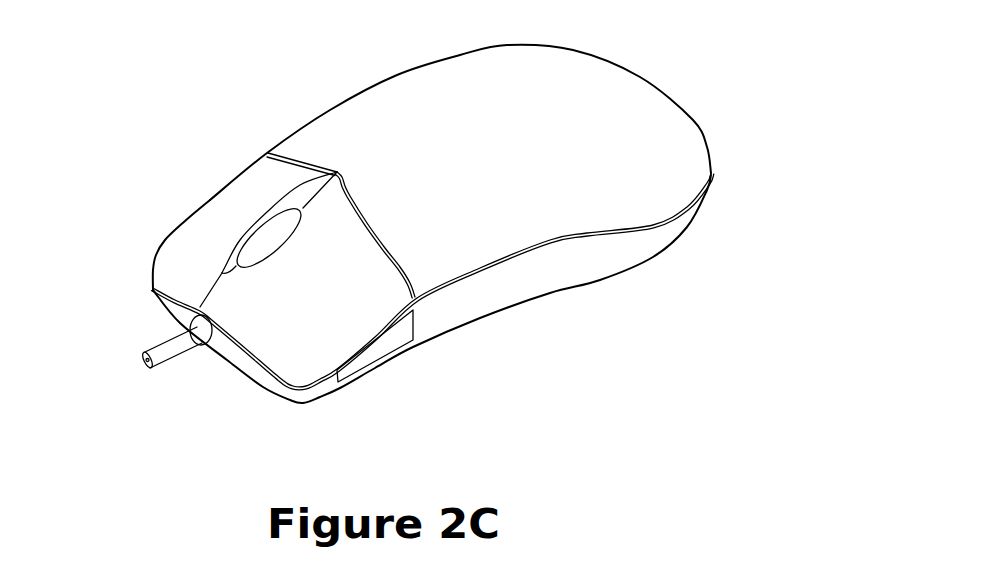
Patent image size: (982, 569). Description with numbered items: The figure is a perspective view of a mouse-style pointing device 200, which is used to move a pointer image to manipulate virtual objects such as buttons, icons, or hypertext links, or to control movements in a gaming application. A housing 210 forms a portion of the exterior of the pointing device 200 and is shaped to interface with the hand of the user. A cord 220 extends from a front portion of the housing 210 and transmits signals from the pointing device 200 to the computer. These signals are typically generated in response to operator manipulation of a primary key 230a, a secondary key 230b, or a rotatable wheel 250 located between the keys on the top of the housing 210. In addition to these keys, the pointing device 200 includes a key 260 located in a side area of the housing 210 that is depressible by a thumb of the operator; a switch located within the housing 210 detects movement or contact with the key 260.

The pointing device 200 is at (173, 207).
The housing 210 is at (543, 62).
The cord 220 is at (175, 345).
The primary key 230a is at (315, 347).
The secondary key 230b is at (185, 248).
The rotatable wheel 250 is at (282, 230).
The key 260 is at (372, 355).